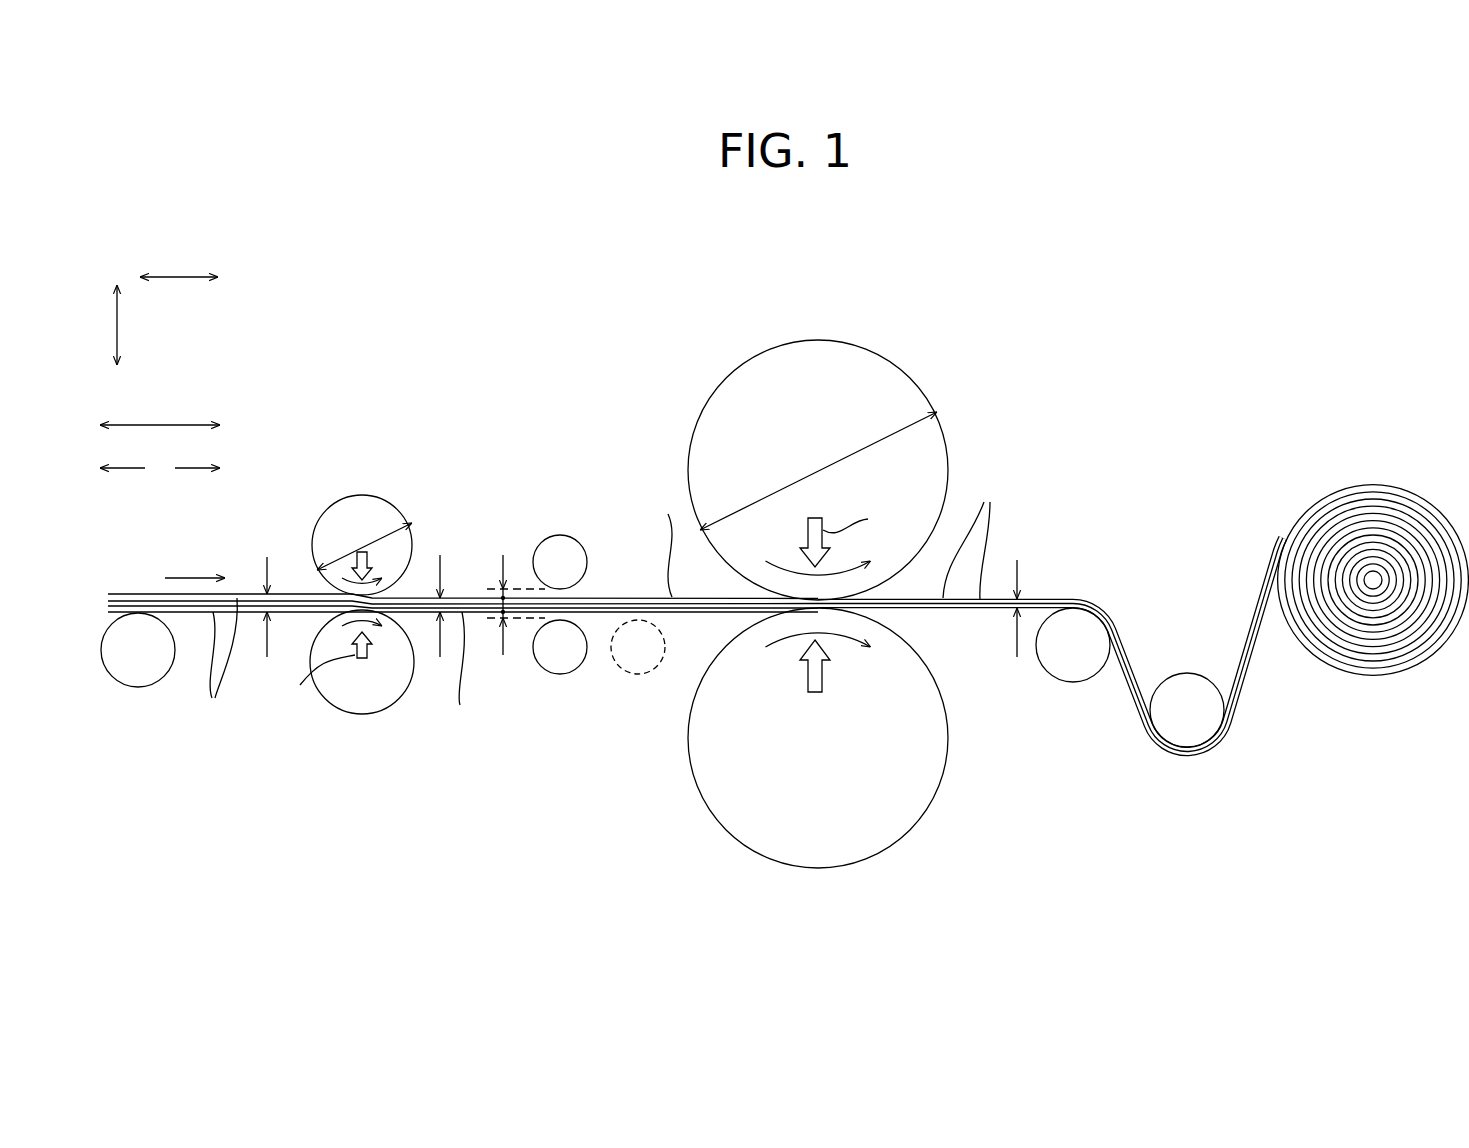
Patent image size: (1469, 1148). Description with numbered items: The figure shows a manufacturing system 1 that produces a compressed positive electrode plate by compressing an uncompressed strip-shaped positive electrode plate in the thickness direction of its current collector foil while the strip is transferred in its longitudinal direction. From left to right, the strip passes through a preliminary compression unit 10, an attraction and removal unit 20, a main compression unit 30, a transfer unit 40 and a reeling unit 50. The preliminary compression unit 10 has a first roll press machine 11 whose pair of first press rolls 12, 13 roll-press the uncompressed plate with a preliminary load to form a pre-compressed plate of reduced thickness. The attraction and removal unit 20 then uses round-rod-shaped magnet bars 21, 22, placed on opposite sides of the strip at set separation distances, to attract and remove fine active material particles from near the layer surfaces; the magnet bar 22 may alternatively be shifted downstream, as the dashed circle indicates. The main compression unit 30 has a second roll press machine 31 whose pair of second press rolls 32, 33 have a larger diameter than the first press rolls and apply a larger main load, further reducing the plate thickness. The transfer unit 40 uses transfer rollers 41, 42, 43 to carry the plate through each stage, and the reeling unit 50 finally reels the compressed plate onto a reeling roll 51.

The manufacturing system 1 is at (1098, 313).
The preliminary compression unit 10 is at (385, 442).
The first roll press machine 11 is at (384, 622).
The first press roll 12 is at (402, 514).
The first press roll 13 is at (360, 698).
The attraction and removal unit 20 is at (587, 483).
The magnet bar 21 is at (580, 548).
The magnet bar 22 is at (573, 657).
The main compression unit 30 is at (913, 372).
The second roll press machine 31 is at (885, 604).
The second press roll 32 is at (948, 432).
The second press roll 33 is at (908, 803).
The transfer unit 40 is at (670, 688).
The transfer roller 41 is at (138, 677).
The transfer roller 42 is at (1073, 672).
The transfer roller 43 is at (1188, 690).
The reeling unit 50 is at (1392, 455).
The reeling roll 51 is at (1373, 585).